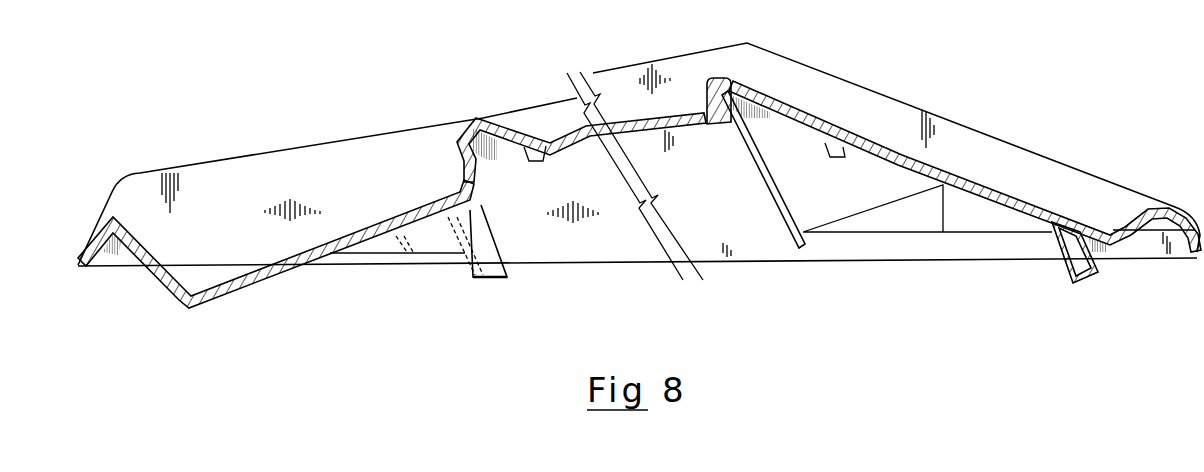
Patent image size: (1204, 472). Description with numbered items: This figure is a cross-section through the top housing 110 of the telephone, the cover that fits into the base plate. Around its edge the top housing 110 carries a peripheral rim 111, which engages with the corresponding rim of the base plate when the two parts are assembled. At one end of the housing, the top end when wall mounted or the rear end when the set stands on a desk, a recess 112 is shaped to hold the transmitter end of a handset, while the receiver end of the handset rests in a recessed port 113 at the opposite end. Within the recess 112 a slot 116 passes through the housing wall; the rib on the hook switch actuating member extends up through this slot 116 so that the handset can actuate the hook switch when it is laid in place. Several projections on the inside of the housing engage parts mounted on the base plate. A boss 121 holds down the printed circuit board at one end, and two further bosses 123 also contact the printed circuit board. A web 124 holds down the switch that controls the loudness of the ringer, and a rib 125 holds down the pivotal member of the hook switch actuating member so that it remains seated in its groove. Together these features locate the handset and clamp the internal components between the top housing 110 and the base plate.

The top housing 110 is at (499, 97).
The peripheral rim 111 is at (85, 267).
The recess 112 is at (241, 223).
The recessed port 113 is at (1052, 181).
The slot 116 is at (383, 230).
The boss 121 is at (836, 157).
The bosses 123 is at (536, 163).
The web 124 is at (428, 258).
The rib 125 is at (493, 278).